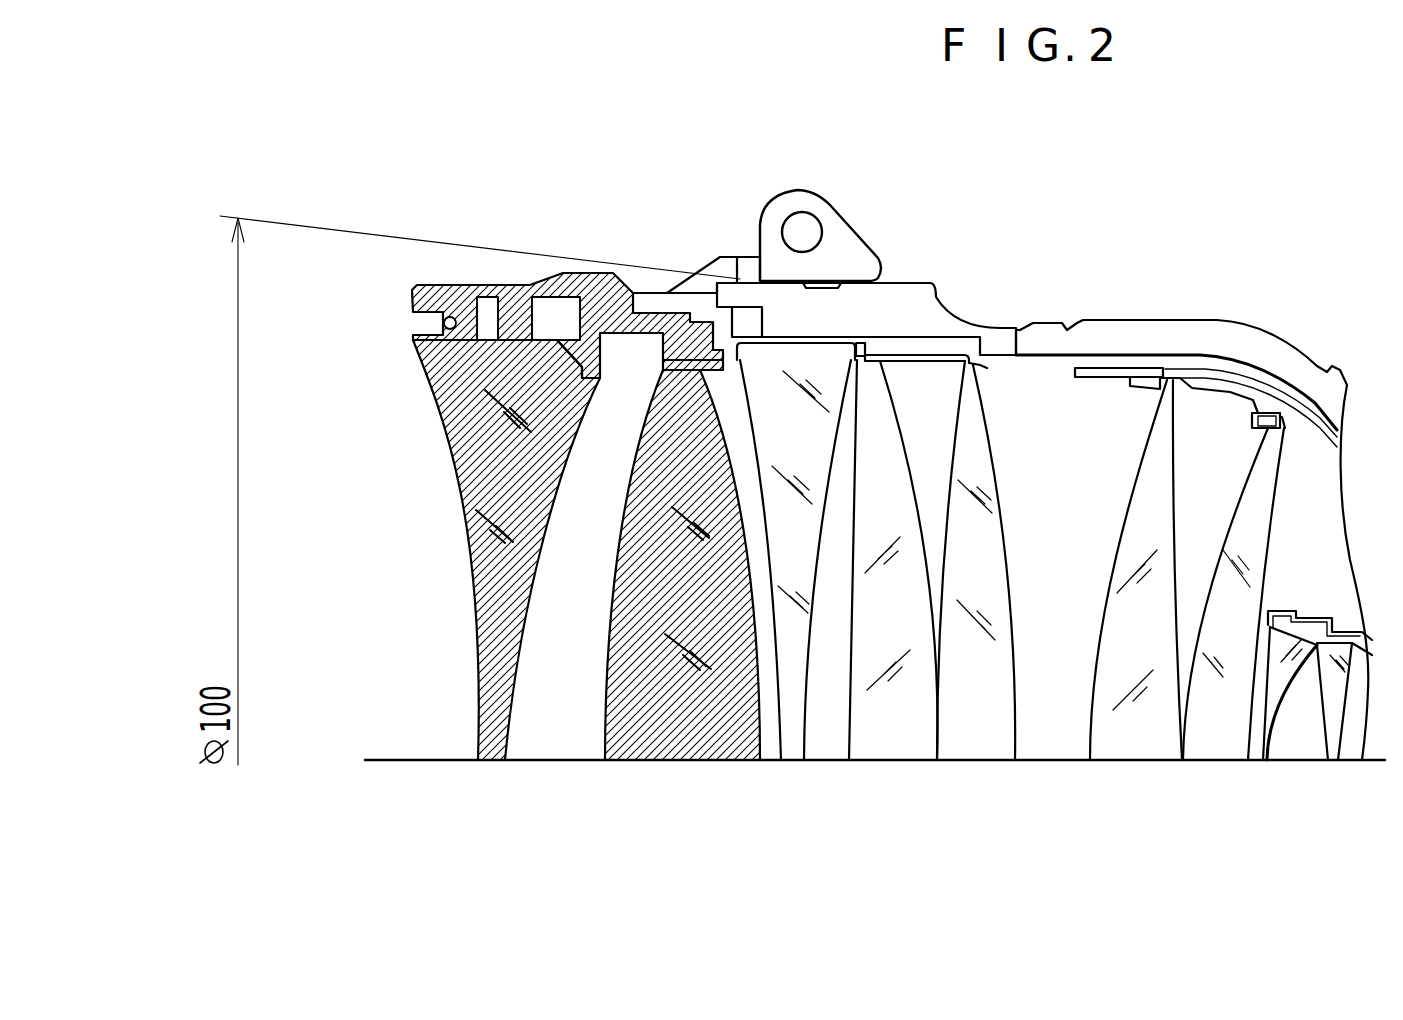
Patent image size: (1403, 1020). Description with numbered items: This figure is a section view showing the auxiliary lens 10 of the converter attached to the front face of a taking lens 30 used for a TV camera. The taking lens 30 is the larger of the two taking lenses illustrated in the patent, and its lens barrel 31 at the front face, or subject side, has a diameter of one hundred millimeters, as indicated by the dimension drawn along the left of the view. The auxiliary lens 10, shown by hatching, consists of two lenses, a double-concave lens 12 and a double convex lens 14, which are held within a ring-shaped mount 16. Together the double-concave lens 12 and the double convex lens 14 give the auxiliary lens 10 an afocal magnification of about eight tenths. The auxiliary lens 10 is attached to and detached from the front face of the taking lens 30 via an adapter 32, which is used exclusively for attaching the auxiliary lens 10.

The auxiliary lens 10 is at (587, 234).
The double-concave lens 12 is at (503, 720).
The double convex lens 14 is at (682, 717).
The ring-shaped mount 16 is at (512, 290).
The taking lens 30 is at (1119, 279).
The lens barrel 31 is at (893, 300).
The adapter 32 is at (777, 213).